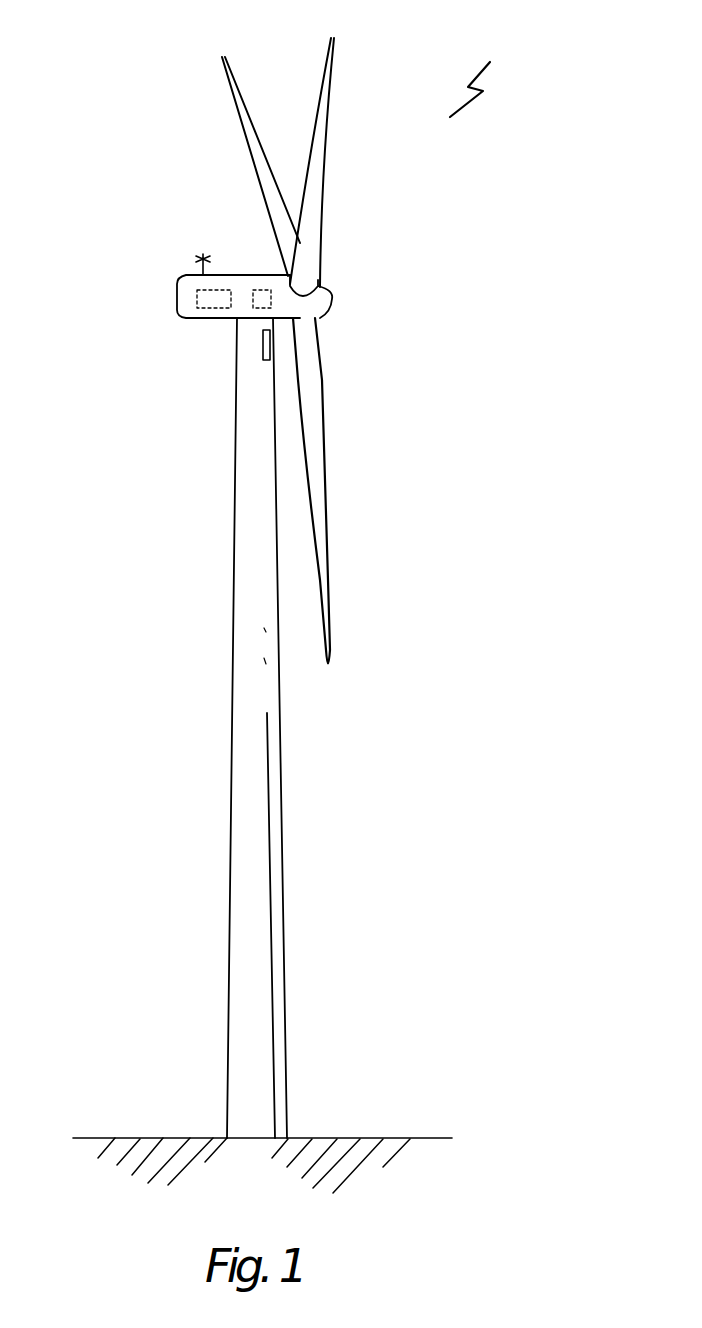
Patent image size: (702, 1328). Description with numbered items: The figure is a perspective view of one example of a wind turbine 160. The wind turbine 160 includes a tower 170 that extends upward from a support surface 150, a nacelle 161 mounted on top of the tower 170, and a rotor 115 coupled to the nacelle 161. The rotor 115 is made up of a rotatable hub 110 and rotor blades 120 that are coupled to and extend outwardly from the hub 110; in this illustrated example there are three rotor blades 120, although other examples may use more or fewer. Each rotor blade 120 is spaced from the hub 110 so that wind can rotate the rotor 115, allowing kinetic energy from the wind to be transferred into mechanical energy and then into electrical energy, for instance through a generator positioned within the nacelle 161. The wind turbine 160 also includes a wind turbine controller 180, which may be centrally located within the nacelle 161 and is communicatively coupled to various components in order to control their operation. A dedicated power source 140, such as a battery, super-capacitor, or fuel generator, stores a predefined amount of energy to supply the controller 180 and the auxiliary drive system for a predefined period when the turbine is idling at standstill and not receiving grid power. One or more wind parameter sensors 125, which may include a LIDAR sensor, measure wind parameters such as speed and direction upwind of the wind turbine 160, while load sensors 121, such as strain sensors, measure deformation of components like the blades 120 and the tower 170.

The rotatable hub 110 is at (332, 300).
The rotor 115 is at (334, 274).
The rotor blade 120 is at (323, 78).
The load sensor 121 is at (263, 345).
The wind parameter sensor 125 is at (200, 252).
The dedicated power source 140 is at (261, 302).
The support surface 150 is at (155, 1138).
The wind turbine 160 is at (505, 82).
The nacelle 161 is at (212, 321).
The tower 170 is at (240, 842).
The wind turbine controller 180 is at (213, 304).